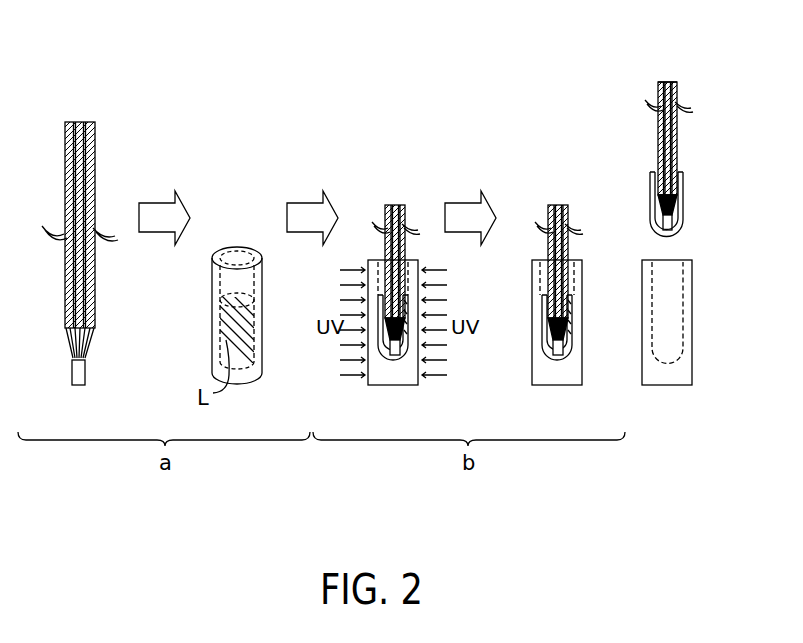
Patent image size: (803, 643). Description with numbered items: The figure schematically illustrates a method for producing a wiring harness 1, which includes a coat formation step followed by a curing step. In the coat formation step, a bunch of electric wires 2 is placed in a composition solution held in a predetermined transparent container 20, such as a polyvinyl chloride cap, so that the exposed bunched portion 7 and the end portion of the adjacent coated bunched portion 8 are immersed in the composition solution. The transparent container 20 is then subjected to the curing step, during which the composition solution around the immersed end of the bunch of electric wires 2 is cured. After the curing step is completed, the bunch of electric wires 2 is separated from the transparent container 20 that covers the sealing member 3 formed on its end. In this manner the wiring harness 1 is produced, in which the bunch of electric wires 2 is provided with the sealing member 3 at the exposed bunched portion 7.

The wiring harness 1 is at (690, 87).
The bunch of electric wires 2 is at (97, 176).
The sealing member 3 is at (585, 341).
The exposed bunched portion 7 is at (86, 346).
The coated bunched portion 8 is at (96, 300).
The transparent container 20 is at (247, 367).